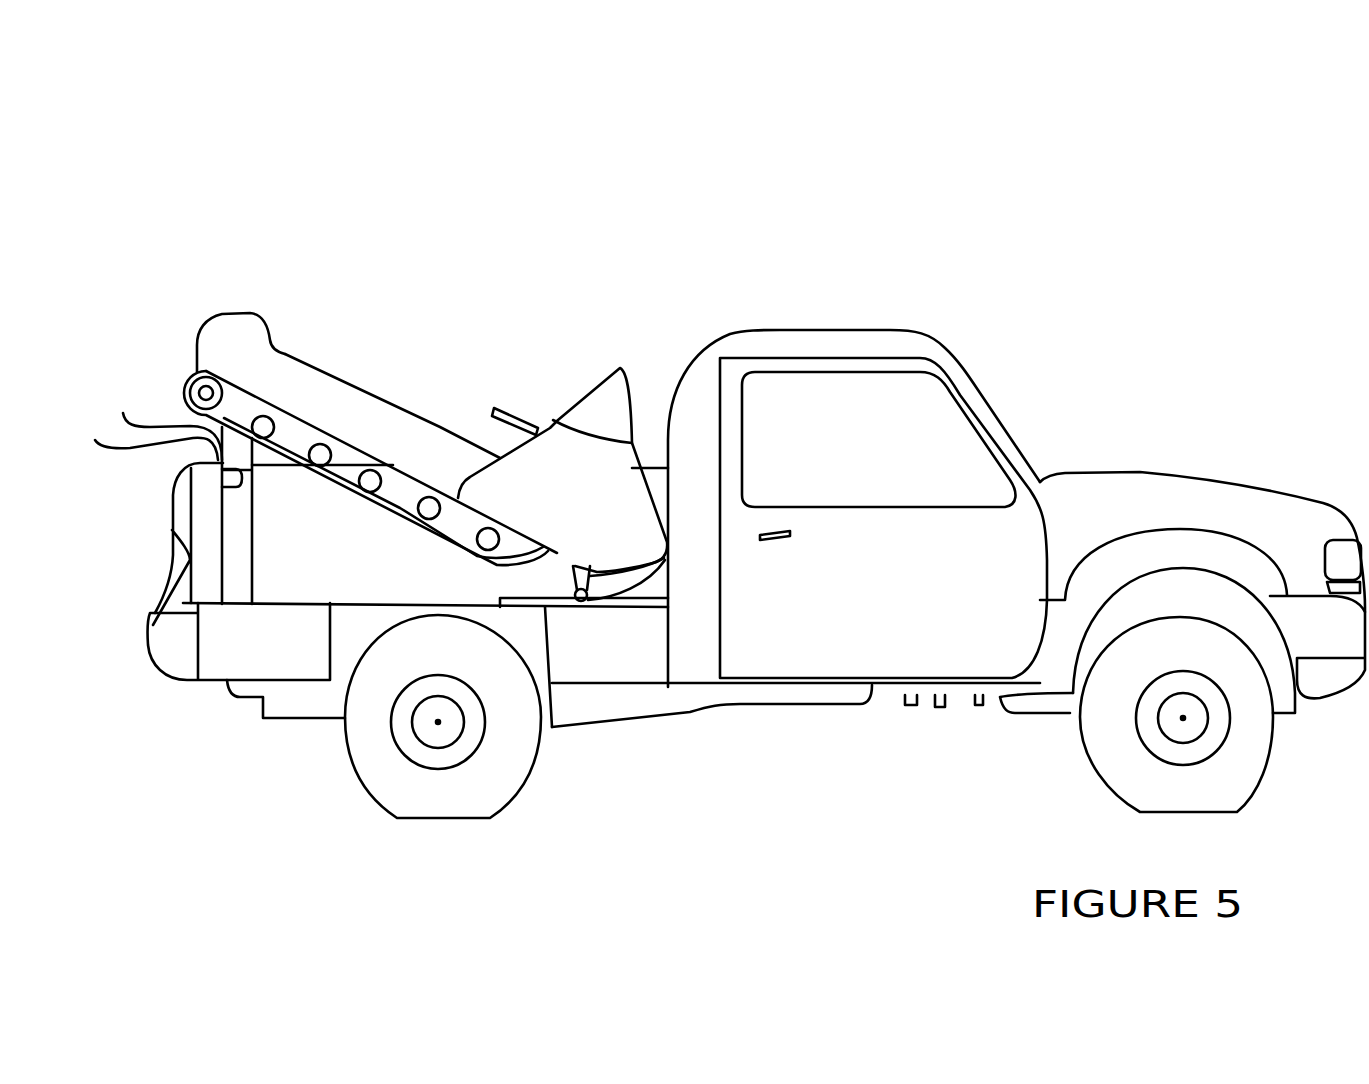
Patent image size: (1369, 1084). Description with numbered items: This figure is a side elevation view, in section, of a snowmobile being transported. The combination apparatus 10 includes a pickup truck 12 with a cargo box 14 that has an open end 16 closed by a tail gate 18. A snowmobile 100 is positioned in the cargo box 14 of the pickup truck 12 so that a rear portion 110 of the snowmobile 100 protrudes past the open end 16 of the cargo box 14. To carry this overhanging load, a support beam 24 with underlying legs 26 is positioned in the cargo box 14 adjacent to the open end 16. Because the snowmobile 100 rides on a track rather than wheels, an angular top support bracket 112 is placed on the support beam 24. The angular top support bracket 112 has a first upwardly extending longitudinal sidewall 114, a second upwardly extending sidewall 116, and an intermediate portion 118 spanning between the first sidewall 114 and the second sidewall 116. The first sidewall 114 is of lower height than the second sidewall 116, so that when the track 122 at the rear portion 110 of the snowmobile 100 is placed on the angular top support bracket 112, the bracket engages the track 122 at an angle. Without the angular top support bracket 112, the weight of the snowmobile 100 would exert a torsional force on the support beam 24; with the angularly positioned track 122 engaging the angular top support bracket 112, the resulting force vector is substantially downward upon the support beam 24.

The combination apparatus 10 is at (769, 243).
The pickup truck 12 is at (993, 410).
The cargo box 14 is at (378, 570).
The open end 16 is at (153, 625).
The tail gate 18 is at (172, 530).
The support beam 24 is at (253, 512).
The legs 26 is at (243, 576).
The snowmobile 100 is at (388, 422).
The rear portion 110 is at (197, 343).
The angular top support bracket 112 is at (123, 432).
The first upwardly extending longitudinal sidewall 114 is at (300, 423).
The second upwardly extending sidewall 116 is at (158, 415).
The intermediate portion 118 is at (173, 487).
The track 122 is at (184, 381).